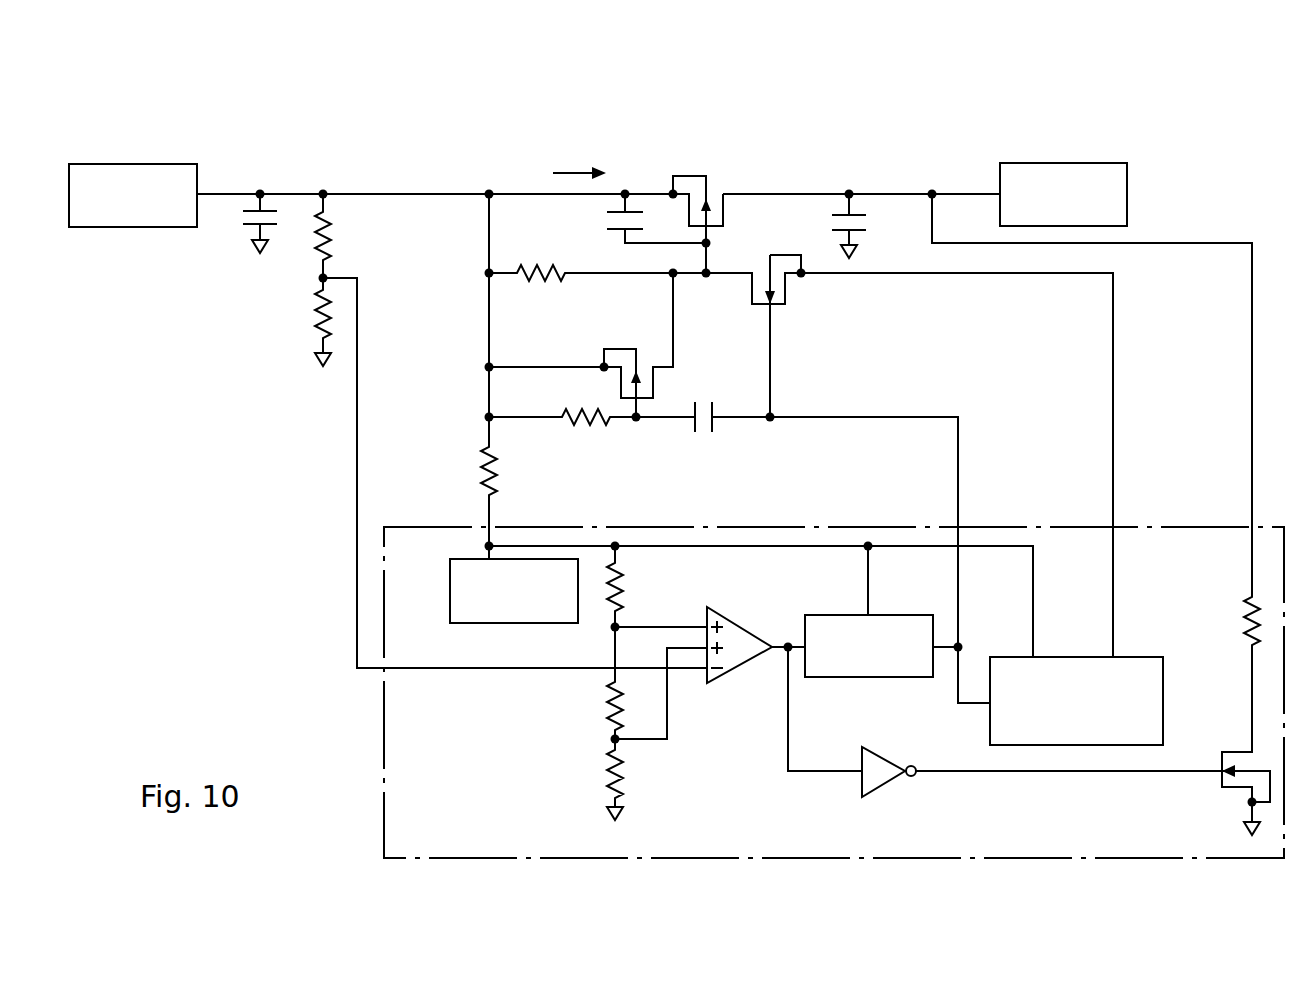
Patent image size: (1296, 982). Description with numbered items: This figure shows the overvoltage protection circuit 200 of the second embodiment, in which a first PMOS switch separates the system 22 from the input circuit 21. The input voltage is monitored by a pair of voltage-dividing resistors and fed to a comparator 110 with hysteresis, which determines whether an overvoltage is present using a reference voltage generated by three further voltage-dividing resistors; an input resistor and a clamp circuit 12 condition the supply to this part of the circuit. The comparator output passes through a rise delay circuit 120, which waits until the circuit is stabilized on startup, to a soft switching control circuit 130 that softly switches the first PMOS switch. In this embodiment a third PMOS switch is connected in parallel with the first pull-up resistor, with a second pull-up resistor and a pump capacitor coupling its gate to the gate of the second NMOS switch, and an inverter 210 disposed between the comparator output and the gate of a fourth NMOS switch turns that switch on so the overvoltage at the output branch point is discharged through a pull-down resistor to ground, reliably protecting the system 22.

The overvoltage protection circuit 200 is at (900, 124).
The input circuit 21 is at (176, 163).
The system 22 is at (1086, 163).
The clamp circuit 12 is at (450, 596).
The comparator 110 is at (739, 667).
The rise delay circuit 120 is at (834, 678).
The soft switching control circuit 130 is at (1165, 699).
The inverter 210 is at (888, 783).